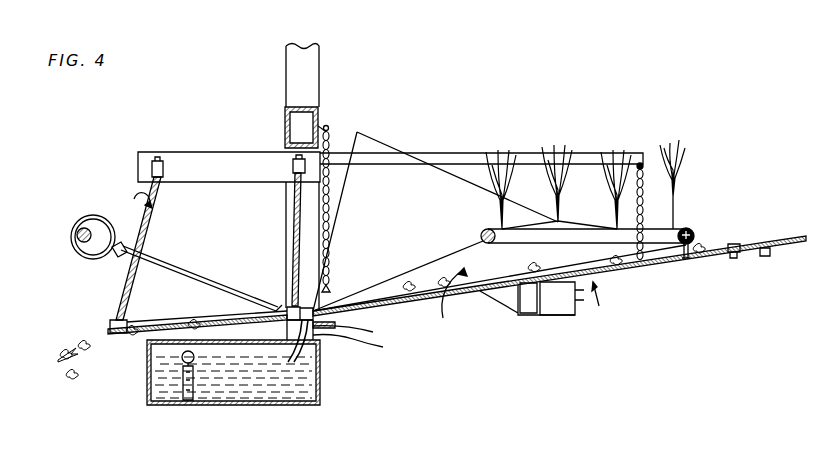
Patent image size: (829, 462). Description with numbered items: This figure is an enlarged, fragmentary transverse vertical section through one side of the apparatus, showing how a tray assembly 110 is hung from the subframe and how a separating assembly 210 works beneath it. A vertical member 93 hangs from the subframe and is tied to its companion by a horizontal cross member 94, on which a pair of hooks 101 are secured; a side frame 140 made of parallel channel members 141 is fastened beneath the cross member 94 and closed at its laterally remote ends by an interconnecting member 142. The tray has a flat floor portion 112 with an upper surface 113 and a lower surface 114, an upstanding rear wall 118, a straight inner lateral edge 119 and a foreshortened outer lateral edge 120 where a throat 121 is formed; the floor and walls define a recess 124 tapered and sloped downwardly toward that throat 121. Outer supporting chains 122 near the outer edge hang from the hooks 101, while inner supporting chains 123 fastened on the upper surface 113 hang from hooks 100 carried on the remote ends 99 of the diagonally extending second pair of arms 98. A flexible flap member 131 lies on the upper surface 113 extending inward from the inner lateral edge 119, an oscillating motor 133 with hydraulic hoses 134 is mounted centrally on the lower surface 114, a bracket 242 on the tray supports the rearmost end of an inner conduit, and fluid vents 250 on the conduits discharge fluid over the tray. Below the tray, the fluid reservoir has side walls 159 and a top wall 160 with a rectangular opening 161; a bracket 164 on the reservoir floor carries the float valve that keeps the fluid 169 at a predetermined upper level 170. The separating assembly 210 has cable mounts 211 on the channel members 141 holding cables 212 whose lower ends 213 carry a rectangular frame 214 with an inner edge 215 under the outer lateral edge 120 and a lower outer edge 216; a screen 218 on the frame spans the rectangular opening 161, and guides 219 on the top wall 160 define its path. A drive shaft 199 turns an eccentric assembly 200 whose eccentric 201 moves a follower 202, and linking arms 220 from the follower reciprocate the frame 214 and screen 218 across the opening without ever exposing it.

The vertical member 93 is at (301, 54).
The horizontal cross member 94 is at (285, 128).
The second pair of arms 98 is at (424, 153).
The remote ends 99 is at (603, 152).
The hooks 100 is at (630, 156).
The hooks 101 is at (327, 125).
The tray assembly 110 is at (617, 301).
The floor portion 112 is at (606, 271).
The upper surface 113 is at (556, 278).
The lower surface 114 is at (672, 271).
The rear wall 118 is at (405, 244).
The inner lateral edge 119 is at (768, 253).
The outer lateral edge 120 is at (362, 334).
The throat 121 is at (322, 306).
The outer supporting chains 122 is at (331, 138).
The inner supporting chains 123 is at (641, 222).
The recess 124 is at (460, 301).
The flap member 131 is at (794, 232).
The oscillating motor 133 is at (528, 312).
The hydraulic hoses 134 is at (578, 292).
The side frame 140 is at (366, 212).
The channel members 141 is at (229, 167).
The interconnecting member 142 is at (138, 168).
The side walls 159 is at (147, 384).
The top wall 160 is at (366, 349).
The rectangular opening 161 is at (222, 341).
The bracket 164 is at (187, 407).
The fluid 169 is at (320, 382).
The upper level 170 is at (300, 356).
The drive shaft 199 is at (76, 233).
The eccentric assembly 200 is at (107, 215).
The eccentric 201 is at (96, 256).
The follower 202 is at (77, 240).
The separating assembly 210 is at (131, 207).
The cable mounts 211 is at (160, 177).
The cable 212 is at (150, 226).
The lower ends 213 is at (115, 318).
The rectangular frame 214 is at (226, 313).
The inner edge 215 is at (336, 322).
The outer edge 216 is at (110, 330).
The screen 218 is at (130, 336).
The guides 219 is at (178, 318).
The linking arms 220 is at (165, 263).
The bracket 242 is at (686, 256).
The fluid vents 250 is at (560, 222).